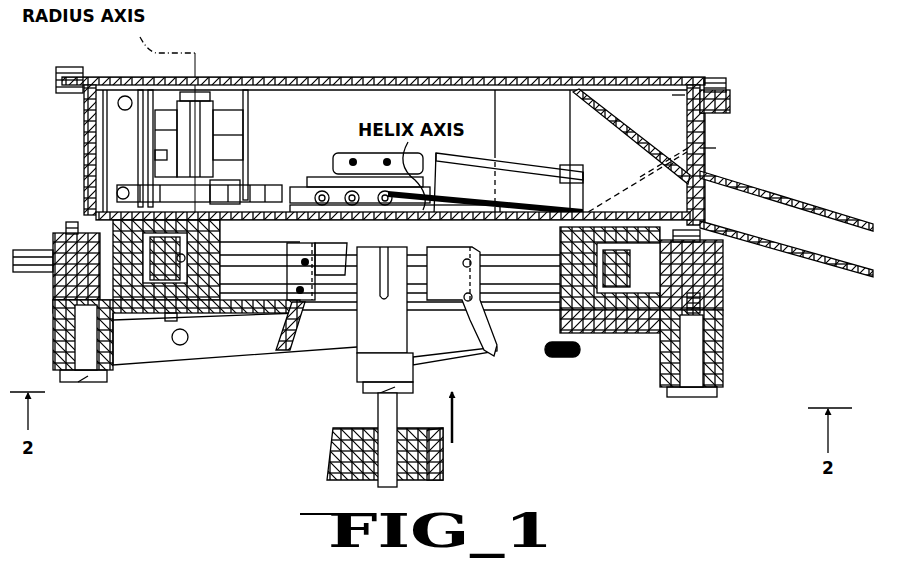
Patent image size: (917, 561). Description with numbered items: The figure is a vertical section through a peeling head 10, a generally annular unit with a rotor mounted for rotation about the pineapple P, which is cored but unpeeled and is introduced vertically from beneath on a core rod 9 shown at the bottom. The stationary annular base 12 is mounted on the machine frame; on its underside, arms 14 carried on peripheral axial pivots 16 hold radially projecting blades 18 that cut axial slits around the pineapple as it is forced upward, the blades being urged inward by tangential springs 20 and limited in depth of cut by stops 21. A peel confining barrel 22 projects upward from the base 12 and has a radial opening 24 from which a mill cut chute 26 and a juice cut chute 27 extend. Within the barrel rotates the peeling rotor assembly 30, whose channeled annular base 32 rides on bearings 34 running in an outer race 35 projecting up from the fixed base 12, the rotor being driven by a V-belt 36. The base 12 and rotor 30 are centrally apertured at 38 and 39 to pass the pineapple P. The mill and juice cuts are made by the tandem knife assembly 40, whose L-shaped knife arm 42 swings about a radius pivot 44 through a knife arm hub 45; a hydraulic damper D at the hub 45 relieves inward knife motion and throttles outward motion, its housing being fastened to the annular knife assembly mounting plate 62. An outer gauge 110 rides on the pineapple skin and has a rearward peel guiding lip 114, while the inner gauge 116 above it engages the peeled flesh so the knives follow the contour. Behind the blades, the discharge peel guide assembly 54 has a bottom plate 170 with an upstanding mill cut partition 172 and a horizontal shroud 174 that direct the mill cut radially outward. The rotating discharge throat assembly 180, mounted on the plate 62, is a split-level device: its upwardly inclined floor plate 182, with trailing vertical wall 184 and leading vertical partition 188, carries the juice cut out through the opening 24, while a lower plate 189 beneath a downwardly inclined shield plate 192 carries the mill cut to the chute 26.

The core rod 9 is at (380, 408).
The peeling head 10 is at (772, 96).
The annular base 12 is at (705, 314).
The arms 14 is at (200, 352).
The peripheral axial pivots 16 is at (85, 342).
The radially projecting blades 18 is at (447, 277).
The tangential springs 20 is at (175, 344).
The stops 21 is at (173, 317).
The peel confining barrel 22 is at (82, 110).
The radial opening 24 is at (700, 118).
The mill cut chute 26 is at (847, 267).
The juice cut chute 27 is at (853, 213).
The peeling rotor assembly 30 is at (112, 232).
The channeled annular base 32 is at (700, 264).
The bearings 34 is at (567, 274).
The outer race 35 is at (567, 251).
The V-belt 36 is at (744, 286).
The central aperture 38 is at (208, 316).
The central aperture 39 is at (225, 272).
The tandem knife assembly 40 is at (312, 173).
The knife arm 42 is at (283, 186).
The radius pivot 44 is at (200, 92).
The knife arm hub 45 is at (203, 120).
The discharge peel guide assembly 54 is at (520, 157).
The annular knife assembly mounting plate 62 is at (92, 210).
The outer gauge 110 is at (333, 218).
The peel guiding lip 114 is at (380, 205).
The inner gauge 116 is at (342, 153).
The bottom plate 170 is at (507, 210).
The mill cut partition 172 is at (572, 182).
The horizontal shroud 174 is at (560, 157).
The rotating discharge throat assembly 180 is at (622, 108).
The upwardly inclined floor plate 182 is at (732, 148).
The trailing vertical wall 184 is at (548, 97).
The vertical partition 188 is at (668, 110).
The lower plate 189 is at (623, 217).
The shield plate 192 is at (595, 96).
The damper D is at (138, 152).
The pineapple P is at (440, 463).